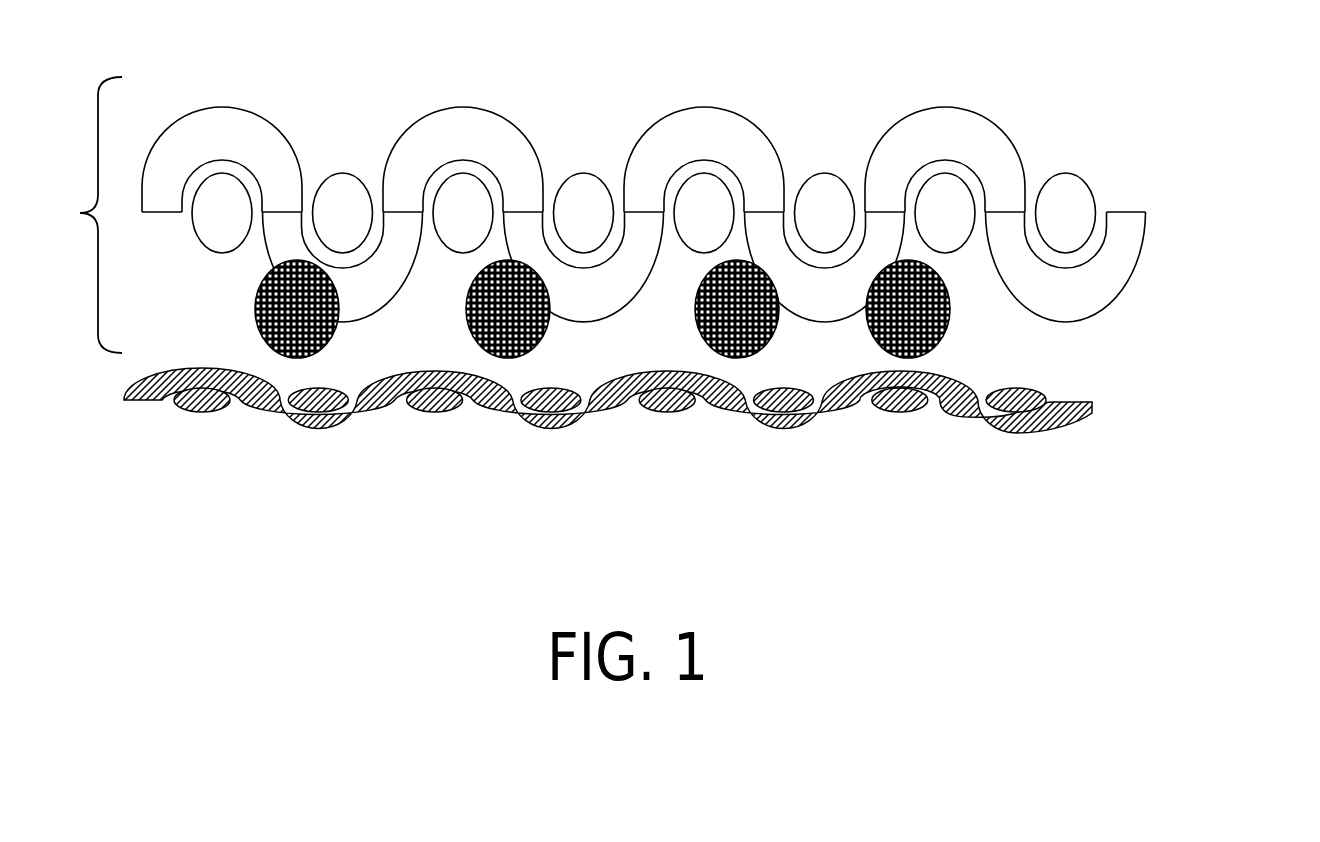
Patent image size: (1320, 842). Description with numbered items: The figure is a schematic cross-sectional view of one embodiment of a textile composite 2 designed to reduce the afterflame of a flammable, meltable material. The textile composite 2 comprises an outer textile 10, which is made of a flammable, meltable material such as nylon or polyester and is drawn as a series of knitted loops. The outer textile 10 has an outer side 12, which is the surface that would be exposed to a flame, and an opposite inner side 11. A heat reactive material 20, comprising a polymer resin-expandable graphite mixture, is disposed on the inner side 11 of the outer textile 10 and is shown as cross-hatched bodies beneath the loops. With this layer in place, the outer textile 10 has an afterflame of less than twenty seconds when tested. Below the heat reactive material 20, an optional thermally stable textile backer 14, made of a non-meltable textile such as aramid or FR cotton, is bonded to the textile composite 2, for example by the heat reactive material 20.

The textile composite 2 is at (87, 215).
The outer textile 10 is at (1146, 212).
The inner side 11 is at (1060, 322).
The outer side 12 is at (947, 104).
The thermally stable textile backer 14 is at (781, 433).
The heat reactive material 20 is at (950, 325).